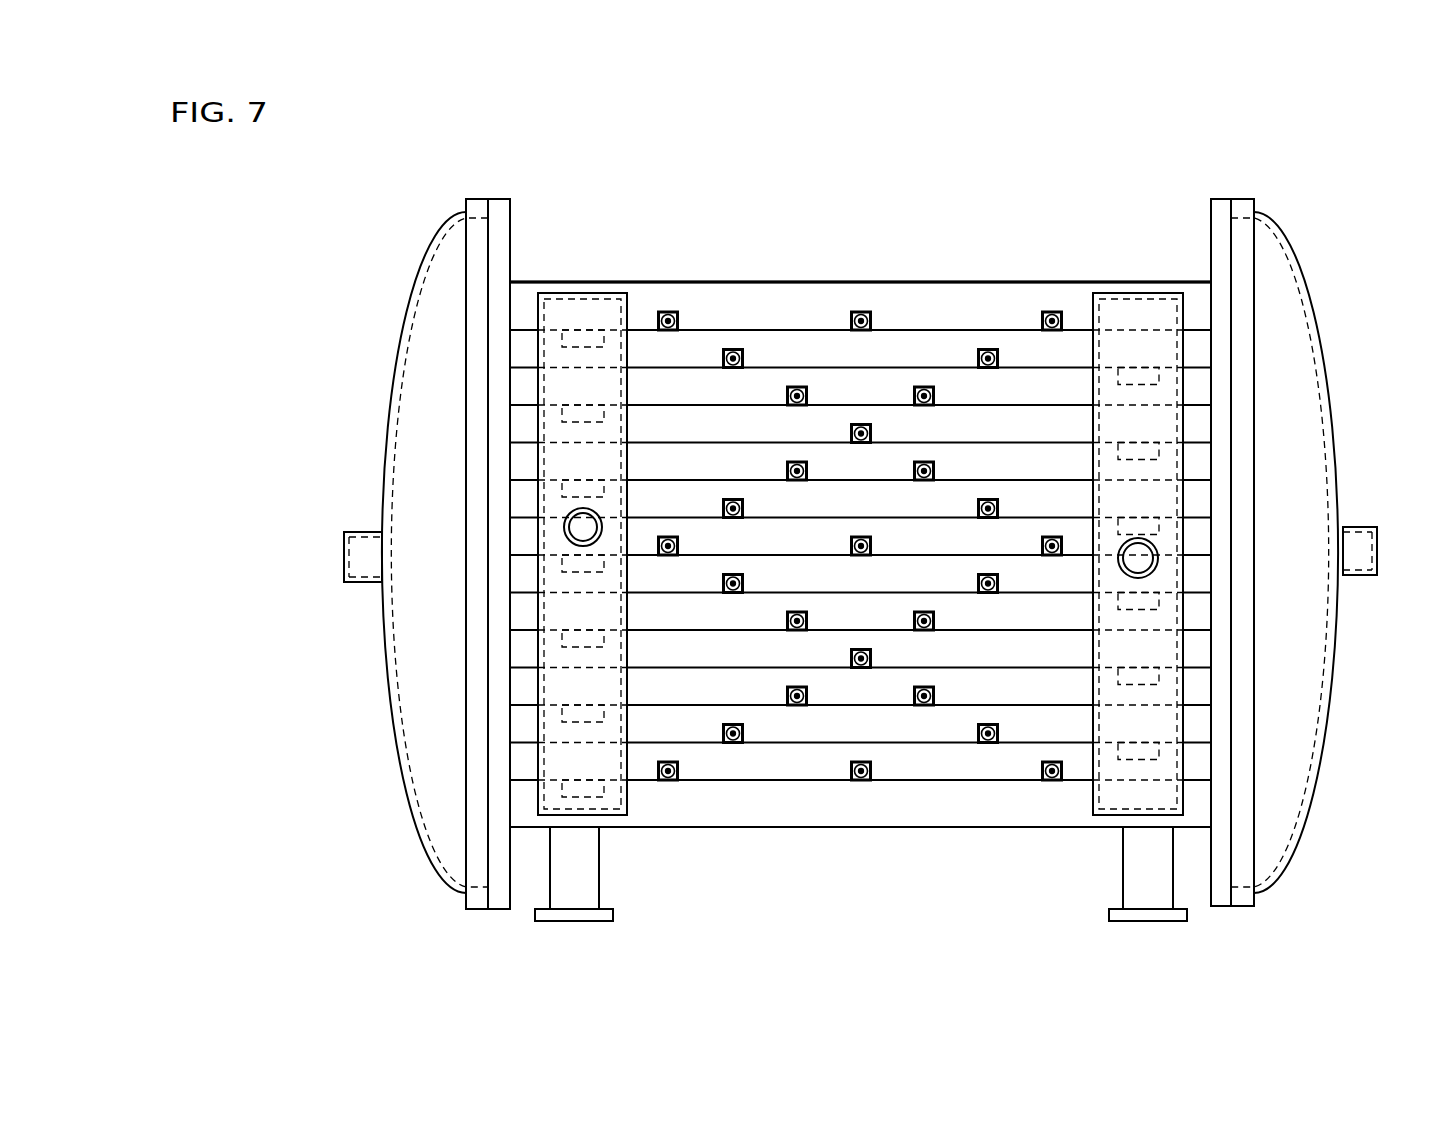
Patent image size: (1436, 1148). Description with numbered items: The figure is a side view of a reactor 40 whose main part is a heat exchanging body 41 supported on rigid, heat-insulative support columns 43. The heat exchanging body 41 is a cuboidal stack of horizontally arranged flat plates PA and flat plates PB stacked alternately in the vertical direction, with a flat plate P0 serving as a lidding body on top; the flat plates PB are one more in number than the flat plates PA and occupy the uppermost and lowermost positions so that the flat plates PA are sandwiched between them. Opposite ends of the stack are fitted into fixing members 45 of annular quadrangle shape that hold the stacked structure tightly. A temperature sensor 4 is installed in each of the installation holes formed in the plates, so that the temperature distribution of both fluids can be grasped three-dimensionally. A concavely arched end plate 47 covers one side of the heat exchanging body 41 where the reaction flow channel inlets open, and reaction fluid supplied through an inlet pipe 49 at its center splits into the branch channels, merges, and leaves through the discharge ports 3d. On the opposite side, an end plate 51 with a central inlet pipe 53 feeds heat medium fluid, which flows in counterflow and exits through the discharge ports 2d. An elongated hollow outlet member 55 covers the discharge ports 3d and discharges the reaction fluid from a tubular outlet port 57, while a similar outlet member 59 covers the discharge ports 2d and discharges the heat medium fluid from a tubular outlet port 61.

The reactor 40 is at (1012, 198).
The heat exchanging body 41 is at (748, 282).
The support column 43 is at (598, 878).
The fixing member 45 is at (503, 225).
The end plate 47 is at (415, 307).
The inlet pipe 49 is at (357, 532).
The end plate 51 is at (1310, 302).
The inlet pipe 53 is at (1368, 527).
The outlet member 55 is at (1139, 293).
The outlet port 57 is at (1118, 560).
The outlet member 59 is at (586, 293).
The outlet port 61 is at (603, 528).
The temperature sensor 4 is at (668, 312).
The discharge port 2d is at (590, 344).
The discharge port 3d is at (1138, 375).
The flat plate P0 is at (910, 287).
The flat plate PA is at (882, 383).
The flat plate PB is at (877, 345).